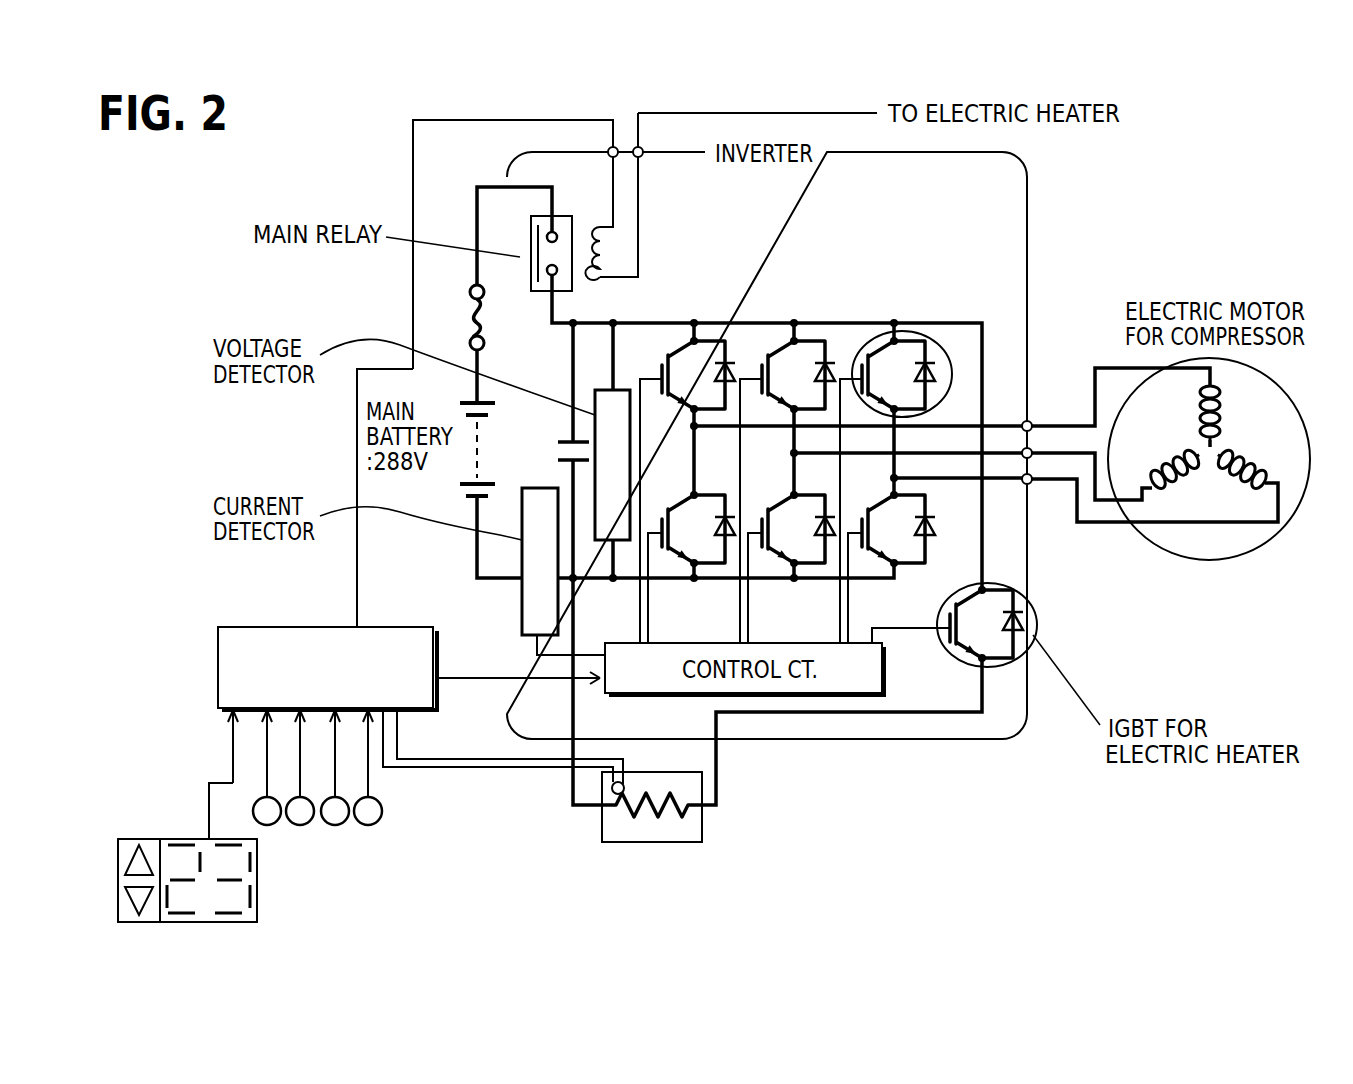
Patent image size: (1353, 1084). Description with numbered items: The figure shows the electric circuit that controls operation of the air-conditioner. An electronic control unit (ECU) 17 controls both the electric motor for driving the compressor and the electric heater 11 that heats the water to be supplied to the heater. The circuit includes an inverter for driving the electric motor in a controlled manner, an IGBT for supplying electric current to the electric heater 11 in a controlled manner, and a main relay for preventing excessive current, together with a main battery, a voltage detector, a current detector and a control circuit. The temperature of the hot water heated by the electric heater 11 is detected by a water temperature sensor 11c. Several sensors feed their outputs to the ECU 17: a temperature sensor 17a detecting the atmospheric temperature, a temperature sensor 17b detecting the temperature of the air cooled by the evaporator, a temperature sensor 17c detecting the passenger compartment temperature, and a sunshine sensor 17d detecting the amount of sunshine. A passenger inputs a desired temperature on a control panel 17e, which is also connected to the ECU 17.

The electric heater 11 is at (602, 832).
The water temperature sensor 11c is at (612, 786).
The electronic control unit (ECU) 17 is at (242, 626).
The temperature sensor 17a is at (383, 811).
The temperature sensor 17b is at (345, 823).
The temperature sensor 17c is at (307, 823).
The sunshine sensor 17d is at (272, 824).
The control panel 17e is at (258, 906).